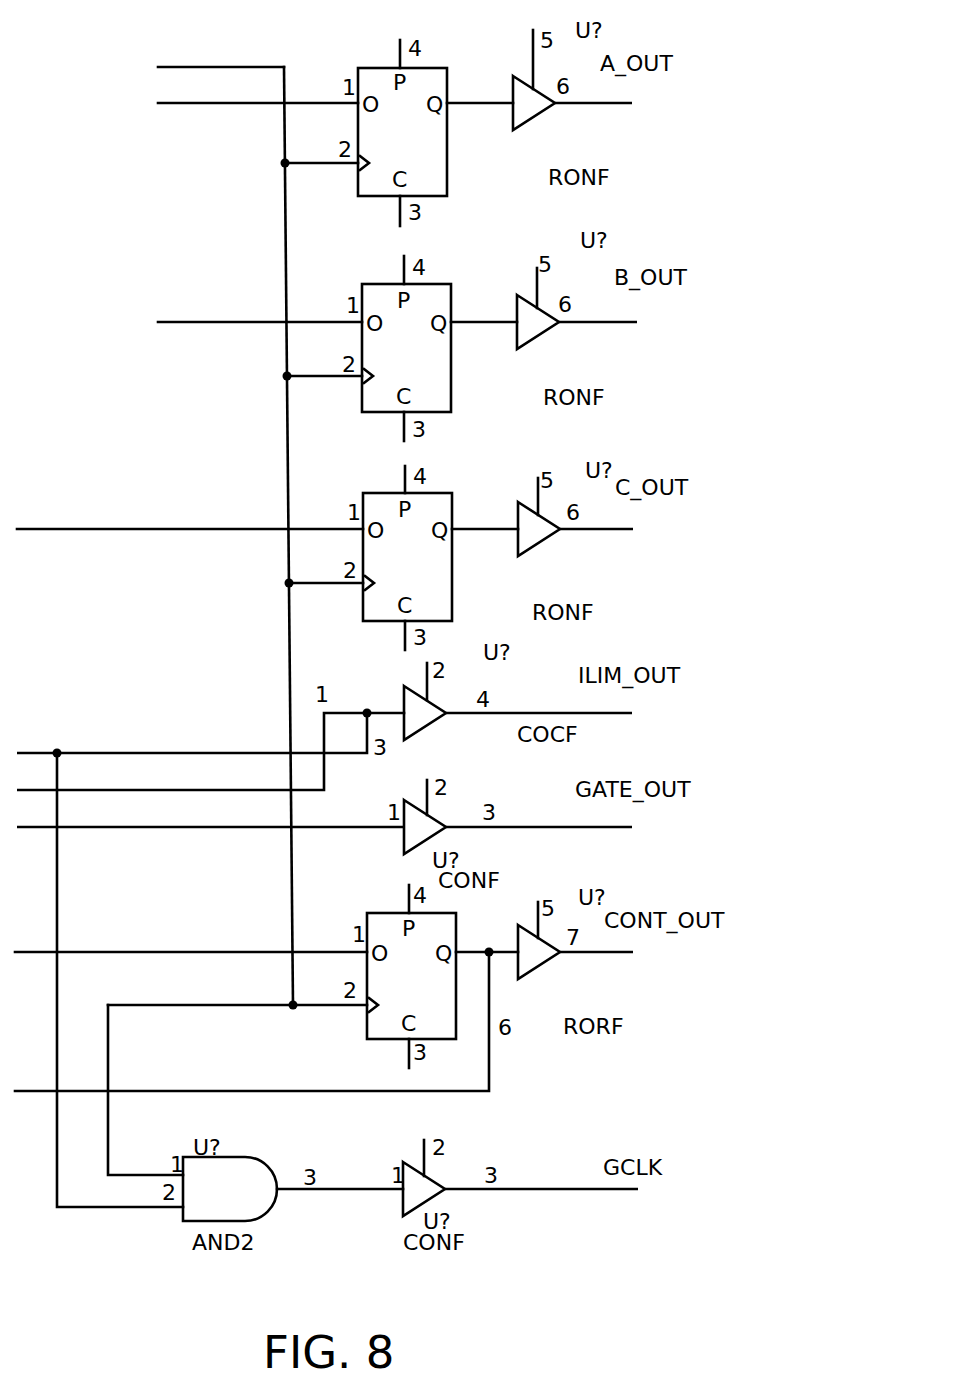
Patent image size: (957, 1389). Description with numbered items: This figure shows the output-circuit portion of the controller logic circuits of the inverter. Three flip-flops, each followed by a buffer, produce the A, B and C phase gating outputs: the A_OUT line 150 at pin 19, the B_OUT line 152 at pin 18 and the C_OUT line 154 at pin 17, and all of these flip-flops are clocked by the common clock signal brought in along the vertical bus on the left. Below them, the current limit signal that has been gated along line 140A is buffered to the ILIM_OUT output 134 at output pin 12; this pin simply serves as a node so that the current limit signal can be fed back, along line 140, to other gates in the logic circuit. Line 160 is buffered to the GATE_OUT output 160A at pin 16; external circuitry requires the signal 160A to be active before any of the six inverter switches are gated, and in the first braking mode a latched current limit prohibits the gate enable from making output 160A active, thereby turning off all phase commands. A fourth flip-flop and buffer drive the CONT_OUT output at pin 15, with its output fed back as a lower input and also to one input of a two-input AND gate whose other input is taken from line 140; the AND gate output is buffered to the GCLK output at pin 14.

The A_OUT output line 150 is at (653, 136).
The B_OUT output line 152 is at (650, 349).
The C_OUT output line 154 is at (654, 559).
The output pin 12 (ILIM_OUT) 134 is at (632, 713).
The GATE.OUT output 160A is at (632, 827).
The line 140 / current limit signal 140 is at (207, 752).
The line 140A is at (219, 791).
The input line 160 is at (219, 829).
The A_OUT pin 19 is at (605, 110).
The B_OUT pin 18 is at (608, 323).
The C_OUT pin 17 is at (612, 533).
The output pin 12 is at (552, 722).
The GATE_OUT pin 16 is at (552, 835).
The CONT_OUT pin 15 is at (610, 940).
The GCLK pin 14 is at (545, 1204).